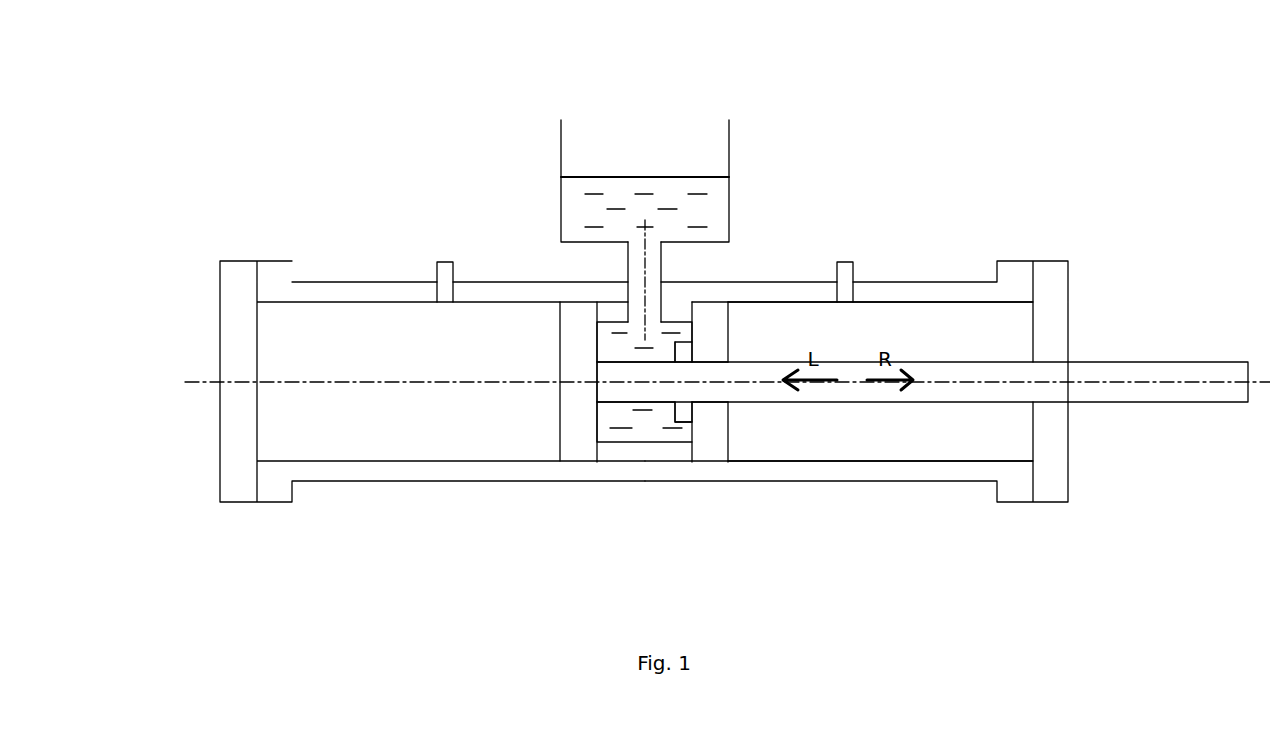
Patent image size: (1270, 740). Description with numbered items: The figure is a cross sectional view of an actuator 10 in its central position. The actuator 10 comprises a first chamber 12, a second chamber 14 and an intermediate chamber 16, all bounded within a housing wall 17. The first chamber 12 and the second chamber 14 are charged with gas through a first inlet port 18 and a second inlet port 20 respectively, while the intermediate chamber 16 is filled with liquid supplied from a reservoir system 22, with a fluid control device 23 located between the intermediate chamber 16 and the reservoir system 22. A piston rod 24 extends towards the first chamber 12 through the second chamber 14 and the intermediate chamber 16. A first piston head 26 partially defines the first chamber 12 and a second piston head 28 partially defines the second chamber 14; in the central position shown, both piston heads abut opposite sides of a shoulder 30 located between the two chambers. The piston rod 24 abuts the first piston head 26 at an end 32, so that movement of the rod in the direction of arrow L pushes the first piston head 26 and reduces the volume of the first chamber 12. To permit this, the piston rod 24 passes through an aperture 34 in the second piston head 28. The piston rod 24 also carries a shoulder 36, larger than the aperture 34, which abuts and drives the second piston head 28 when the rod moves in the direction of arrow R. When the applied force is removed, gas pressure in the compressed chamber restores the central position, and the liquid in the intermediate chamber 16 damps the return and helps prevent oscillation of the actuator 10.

The actuator 10 is at (790, 127).
The first chamber 12 is at (491, 337).
The second chamber 14 is at (958, 340).
The intermediate chamber 16 is at (643, 337).
The housing wall 17 is at (903, 290).
The first inlet port 18 is at (447, 277).
The second inlet port 20 is at (845, 277).
The reservoir system 22 is at (665, 190).
The fluid control device 23 is at (651, 273).
The piston rod 24 is at (1175, 382).
The first piston head 26 is at (573, 410).
The second piston head 28 is at (720, 428).
The shoulder 30 is at (645, 455).
The end 32 is at (598, 382).
The aperture 34 is at (728, 368).
The shoulder 36 is at (685, 408).